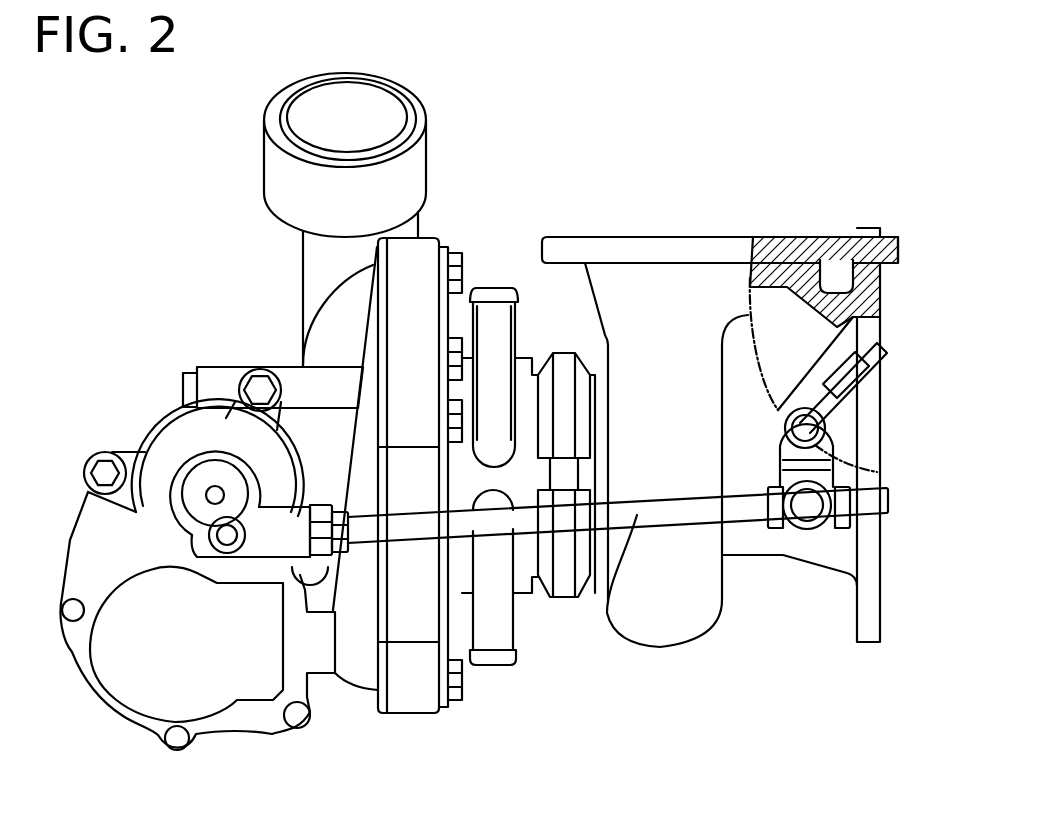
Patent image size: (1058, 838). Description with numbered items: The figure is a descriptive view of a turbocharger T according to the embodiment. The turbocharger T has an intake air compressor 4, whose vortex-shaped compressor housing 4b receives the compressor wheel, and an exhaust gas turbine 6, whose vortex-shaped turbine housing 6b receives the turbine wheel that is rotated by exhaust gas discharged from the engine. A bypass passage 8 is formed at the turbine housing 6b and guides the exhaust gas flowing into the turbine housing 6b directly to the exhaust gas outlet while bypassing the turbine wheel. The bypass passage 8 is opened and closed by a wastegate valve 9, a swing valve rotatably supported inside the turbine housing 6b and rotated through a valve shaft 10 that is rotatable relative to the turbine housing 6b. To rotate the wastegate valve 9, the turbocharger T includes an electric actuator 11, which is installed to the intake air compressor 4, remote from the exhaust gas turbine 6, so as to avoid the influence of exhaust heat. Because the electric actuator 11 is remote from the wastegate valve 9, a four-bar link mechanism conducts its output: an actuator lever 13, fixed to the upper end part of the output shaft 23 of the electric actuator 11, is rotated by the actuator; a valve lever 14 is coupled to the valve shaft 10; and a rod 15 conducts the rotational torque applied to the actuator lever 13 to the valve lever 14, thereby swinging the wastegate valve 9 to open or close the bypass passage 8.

The turbocharger T is at (603, 158).
The intake air compressor 4 is at (283, 305).
The compressor housing 4b is at (358, 655).
The exhaust gas turbine 6 is at (708, 648).
The turbine housing 6b is at (655, 628).
The bypass passage 8 is at (780, 315).
The wastegate valve 9 is at (862, 360).
The valve shaft 10 is at (812, 430).
The electric actuator 11 is at (140, 428).
The actuator lever 13 is at (195, 508).
The valve lever 14 is at (752, 455).
The rod 15 is at (637, 517).
The output shaft 23 is at (213, 488).